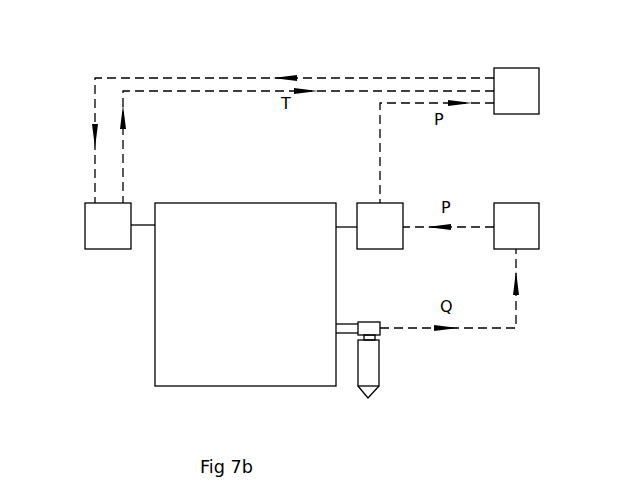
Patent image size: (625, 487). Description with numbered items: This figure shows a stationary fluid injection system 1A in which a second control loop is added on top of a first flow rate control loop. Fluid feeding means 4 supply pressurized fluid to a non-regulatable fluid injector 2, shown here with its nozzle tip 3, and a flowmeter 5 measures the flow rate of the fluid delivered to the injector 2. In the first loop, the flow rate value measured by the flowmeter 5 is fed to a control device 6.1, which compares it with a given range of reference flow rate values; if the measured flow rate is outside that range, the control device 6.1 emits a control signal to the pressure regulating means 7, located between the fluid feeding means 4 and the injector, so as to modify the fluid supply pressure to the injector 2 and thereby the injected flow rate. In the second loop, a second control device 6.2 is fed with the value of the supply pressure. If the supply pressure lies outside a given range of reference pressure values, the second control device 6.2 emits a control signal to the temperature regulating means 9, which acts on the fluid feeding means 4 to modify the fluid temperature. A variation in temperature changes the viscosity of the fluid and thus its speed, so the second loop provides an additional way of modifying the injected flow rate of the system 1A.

The system 1A is at (77, 64).
The non-regulatable fluid injector 2 is at (375, 358).
The nozzle tip 3 is at (367, 392).
The fluid feeding means 4 is at (258, 215).
The flowmeter 5 is at (376, 330).
The control device 6.1 is at (516, 226).
The second control device 6.2 is at (516, 91).
The pressure regulating means 7 is at (369, 226).
The temperature regulating means 9 is at (120, 226).